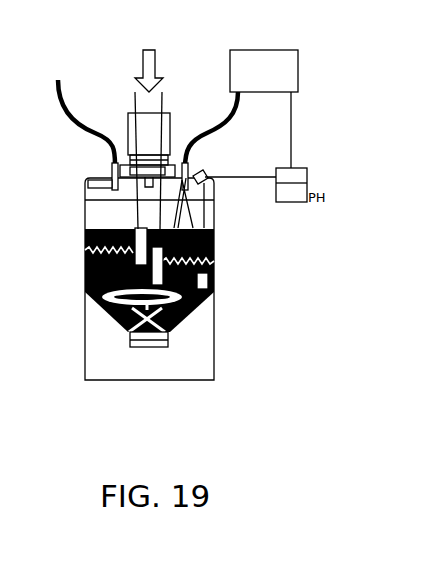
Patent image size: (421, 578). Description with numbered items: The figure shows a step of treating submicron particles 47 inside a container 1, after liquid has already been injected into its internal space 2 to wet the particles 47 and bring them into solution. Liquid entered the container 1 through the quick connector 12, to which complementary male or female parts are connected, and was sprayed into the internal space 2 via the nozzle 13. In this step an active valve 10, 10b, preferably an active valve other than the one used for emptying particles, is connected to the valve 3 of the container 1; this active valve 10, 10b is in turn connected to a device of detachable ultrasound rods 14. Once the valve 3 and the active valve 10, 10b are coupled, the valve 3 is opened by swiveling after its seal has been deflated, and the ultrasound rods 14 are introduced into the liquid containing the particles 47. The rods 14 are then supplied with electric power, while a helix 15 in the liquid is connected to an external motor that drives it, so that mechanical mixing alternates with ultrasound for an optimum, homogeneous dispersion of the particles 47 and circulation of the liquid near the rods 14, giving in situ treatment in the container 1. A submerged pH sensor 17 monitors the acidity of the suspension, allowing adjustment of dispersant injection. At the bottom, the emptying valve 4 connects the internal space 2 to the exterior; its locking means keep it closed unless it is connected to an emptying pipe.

The container 1 is at (66, 373).
The internal space 2 is at (214, 235).
The particles 47 is at (157, 266).
The valve 3 is at (172, 157).
The emptying valve 4 is at (167, 343).
The active valve 10 is at (125, 165).
The active valve 10b is at (211, 130).
The quick connector 12 is at (112, 168).
The nozzle 13 is at (88, 184).
The ultrasound rods 14 is at (135, 230).
The helix 15 is at (108, 300).
The pH sensor 17 is at (208, 282).